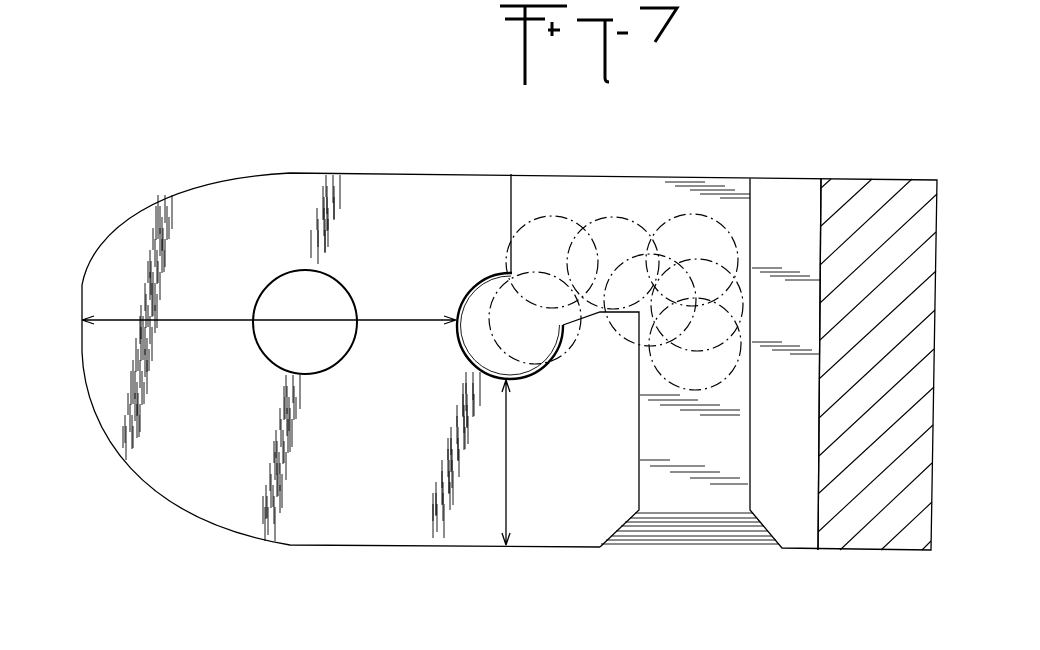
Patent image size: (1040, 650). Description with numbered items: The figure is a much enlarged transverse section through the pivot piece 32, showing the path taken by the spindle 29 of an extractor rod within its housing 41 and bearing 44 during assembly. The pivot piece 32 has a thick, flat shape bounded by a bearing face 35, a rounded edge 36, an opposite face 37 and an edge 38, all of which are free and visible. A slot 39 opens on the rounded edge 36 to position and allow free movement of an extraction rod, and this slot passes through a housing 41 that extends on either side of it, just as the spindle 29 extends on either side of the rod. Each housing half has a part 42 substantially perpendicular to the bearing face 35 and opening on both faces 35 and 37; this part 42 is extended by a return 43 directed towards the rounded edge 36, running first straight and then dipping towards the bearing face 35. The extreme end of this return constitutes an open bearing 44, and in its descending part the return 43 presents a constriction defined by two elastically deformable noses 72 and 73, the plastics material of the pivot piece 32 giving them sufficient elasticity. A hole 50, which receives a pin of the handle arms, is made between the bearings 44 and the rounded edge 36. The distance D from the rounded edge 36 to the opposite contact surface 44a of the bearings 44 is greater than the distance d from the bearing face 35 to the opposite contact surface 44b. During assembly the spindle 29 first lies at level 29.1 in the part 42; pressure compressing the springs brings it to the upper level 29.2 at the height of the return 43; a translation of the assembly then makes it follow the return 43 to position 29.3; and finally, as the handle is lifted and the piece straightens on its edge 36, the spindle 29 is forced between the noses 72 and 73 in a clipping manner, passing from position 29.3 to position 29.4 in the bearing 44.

The spindle 29 is at (710, 218).
The level of spindle on entry 29.1 is at (718, 385).
The upper level of spindle 29.2 is at (758, 241).
The spindle position after translation 29.3 is at (545, 217).
The spindle position in bearing 29.4 is at (463, 292).
The pivot piece 32 is at (309, 149).
The bearing face 35 is at (424, 546).
The rounded edge 36 is at (139, 482).
The face 37 is at (405, 172).
The edge 38 is at (935, 363).
The slot 39 is at (242, 173).
The housing 41 is at (736, 499).
The part of housing 42 is at (704, 458).
The return 43 is at (660, 208).
The open bearing 44 is at (504, 358).
The contact surface of bearing 44a is at (458, 336).
The contact surface of bearing 44b is at (513, 381).
The hole 50 is at (270, 355).
The elastically deformable nose 72 is at (508, 271).
The elastically deformable nose 73 is at (567, 330).
The distance D is at (269, 306).
The distance d is at (520, 462).